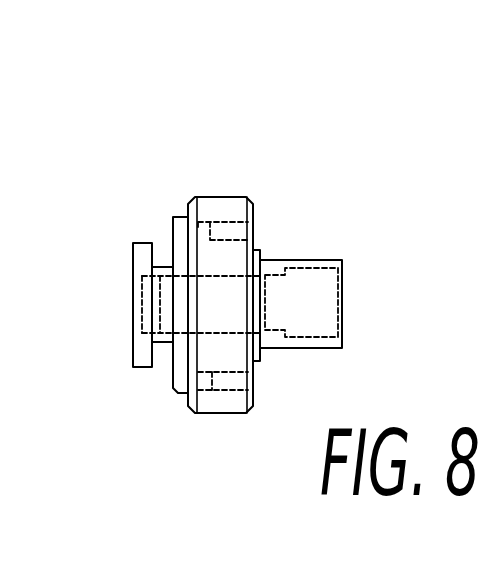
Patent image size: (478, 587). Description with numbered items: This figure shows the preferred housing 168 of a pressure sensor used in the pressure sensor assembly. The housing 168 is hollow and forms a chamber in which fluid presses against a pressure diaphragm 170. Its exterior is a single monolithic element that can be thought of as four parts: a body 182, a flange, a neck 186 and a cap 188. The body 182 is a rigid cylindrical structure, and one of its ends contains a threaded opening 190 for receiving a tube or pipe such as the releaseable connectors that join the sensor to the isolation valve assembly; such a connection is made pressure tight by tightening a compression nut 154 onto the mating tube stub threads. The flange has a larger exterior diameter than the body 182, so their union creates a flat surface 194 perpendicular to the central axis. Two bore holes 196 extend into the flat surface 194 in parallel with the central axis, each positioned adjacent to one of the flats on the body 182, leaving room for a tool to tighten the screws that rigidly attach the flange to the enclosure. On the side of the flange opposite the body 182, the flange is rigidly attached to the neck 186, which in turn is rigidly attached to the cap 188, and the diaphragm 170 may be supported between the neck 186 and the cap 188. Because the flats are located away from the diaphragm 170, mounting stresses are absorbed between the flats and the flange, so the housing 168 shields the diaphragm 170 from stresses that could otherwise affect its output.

The housing 168 is at (132, 124).
The compression nut 154 is at (207, 197).
The neck 186 is at (166, 266).
The pressure diaphragm 170 is at (148, 298).
The cap 188 is at (142, 368).
The bore holes 196 is at (243, 224).
The body 182 is at (292, 267).
The threaded opening 190 is at (325, 283).
The flat surface 194 is at (255, 405).